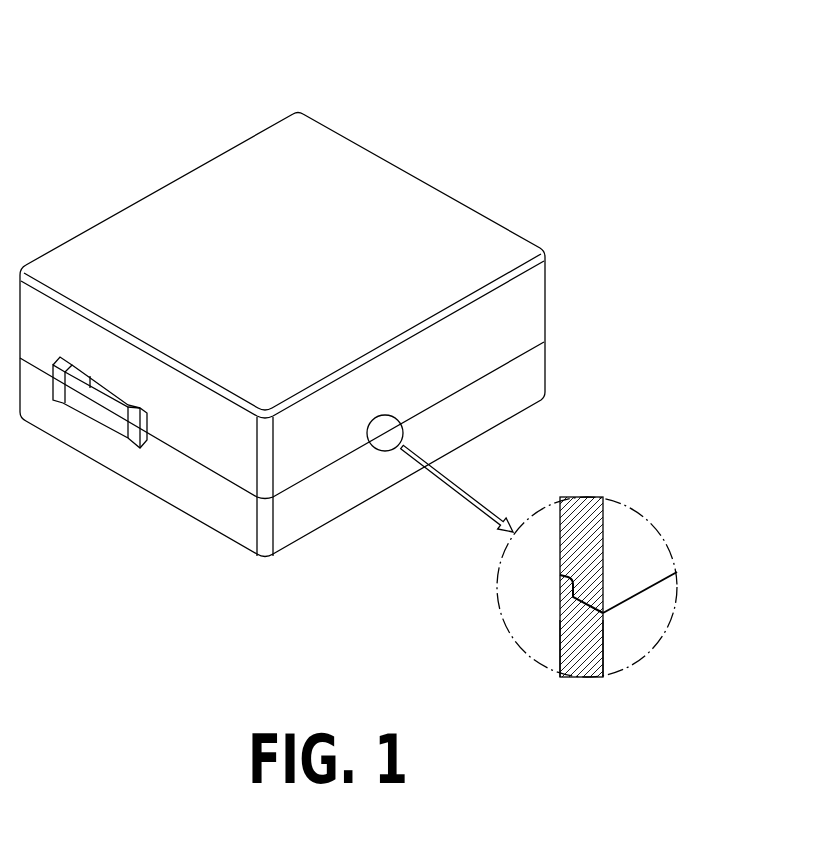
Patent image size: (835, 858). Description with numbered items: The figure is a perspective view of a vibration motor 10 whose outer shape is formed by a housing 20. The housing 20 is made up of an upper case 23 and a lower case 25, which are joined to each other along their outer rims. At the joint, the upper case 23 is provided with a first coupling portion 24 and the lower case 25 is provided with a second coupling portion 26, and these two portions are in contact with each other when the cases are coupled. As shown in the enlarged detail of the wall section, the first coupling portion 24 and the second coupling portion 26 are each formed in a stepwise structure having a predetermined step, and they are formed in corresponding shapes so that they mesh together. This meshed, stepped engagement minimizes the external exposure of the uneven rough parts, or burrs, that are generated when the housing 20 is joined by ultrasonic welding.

The vibration motor 10 is at (68, 54).
The housing 20 is at (352, 170).
The upper case 23 is at (582, 507).
The first coupling portion 24 is at (593, 600).
The lower case 25 is at (580, 658).
The second coupling portion 26 is at (562, 582).